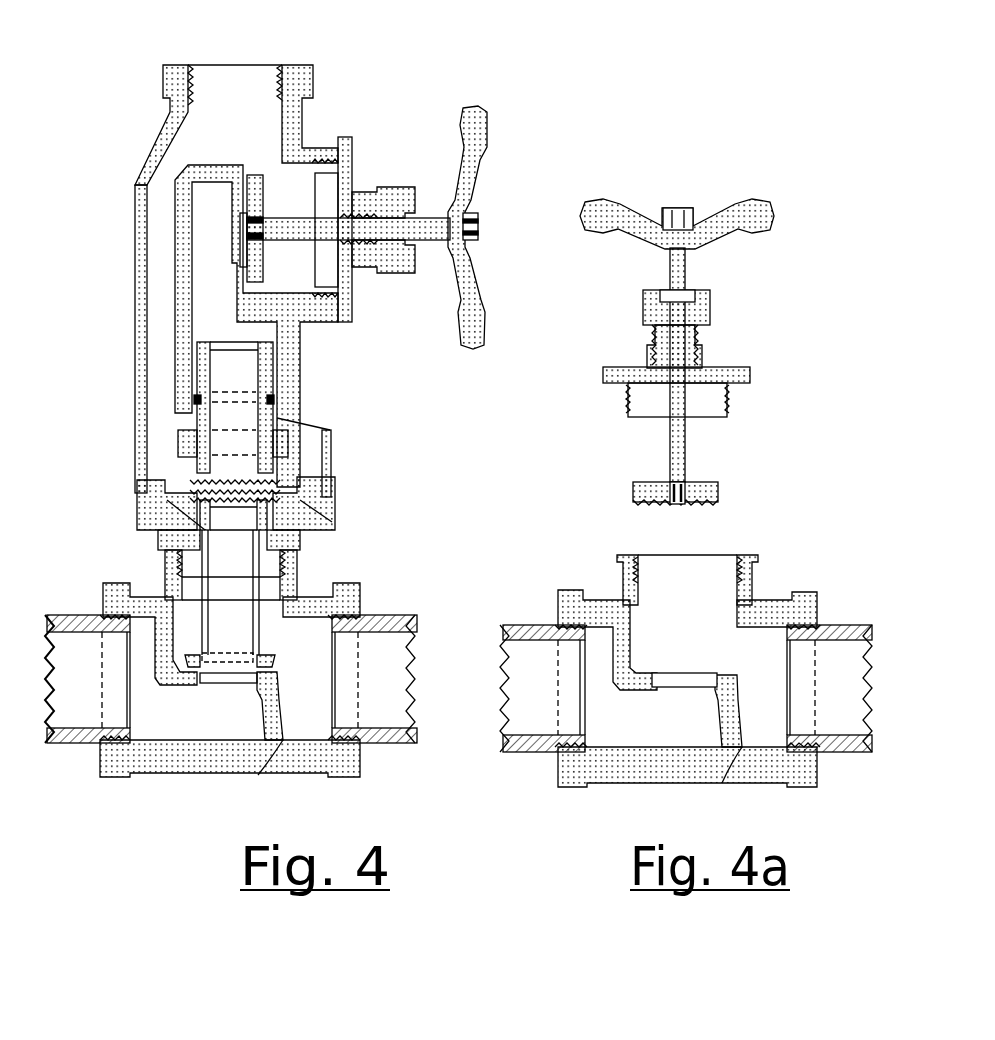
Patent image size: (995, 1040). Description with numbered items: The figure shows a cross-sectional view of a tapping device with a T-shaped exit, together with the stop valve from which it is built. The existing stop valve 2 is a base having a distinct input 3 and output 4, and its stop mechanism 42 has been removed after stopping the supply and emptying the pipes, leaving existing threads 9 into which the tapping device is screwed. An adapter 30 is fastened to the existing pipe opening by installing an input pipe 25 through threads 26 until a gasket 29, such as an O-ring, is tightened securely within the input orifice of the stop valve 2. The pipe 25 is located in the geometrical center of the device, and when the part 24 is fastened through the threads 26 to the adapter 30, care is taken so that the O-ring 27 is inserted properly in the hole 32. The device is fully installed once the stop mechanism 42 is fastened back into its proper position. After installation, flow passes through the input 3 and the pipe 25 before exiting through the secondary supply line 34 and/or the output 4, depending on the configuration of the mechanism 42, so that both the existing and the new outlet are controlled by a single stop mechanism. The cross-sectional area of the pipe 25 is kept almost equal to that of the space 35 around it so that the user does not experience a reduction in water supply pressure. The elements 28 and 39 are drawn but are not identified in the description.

In FIG. 4, the valve base 2 is at (177, 770).
In FIG. 4A, the valve base 2 is at (620, 770).
In FIG. 4, the input 3 is at (123, 677).
In FIG. 4A, the input 3 is at (560, 680).
In FIG. 4, the output 4 is at (347, 683).
In FIG. 4A, the output 4 is at (790, 690).
In FIG. 4, the existing threads 9 is at (292, 568).
In FIG. 4A, the existing threads 9 is at (737, 570).
In FIG. 4, the part 24 is at (168, 133).
In FIG. 4, the input pipe 25 is at (195, 363).
In FIG. 4, the threads 26 is at (175, 478).
In FIG. 4, the O-ring 27 is at (195, 398).
In FIG. 4, the union collar 28 is at (190, 652).
In FIG. 4, the gasket 29 is at (275, 665).
In FIG. 4, the adapter 30 is at (330, 520).
In FIG. 4, the hole 32 is at (220, 323).
In FIG. 4, the secondary supply line 34 is at (242, 72).
In FIG. 4, the space 35 is at (306, 450).
In FIG. 4, the retaining plate 39 is at (324, 487).
In FIG. 4, the stop mechanism 42 is at (367, 197).
In FIG. 4A, the stop mechanism 42 is at (700, 353).